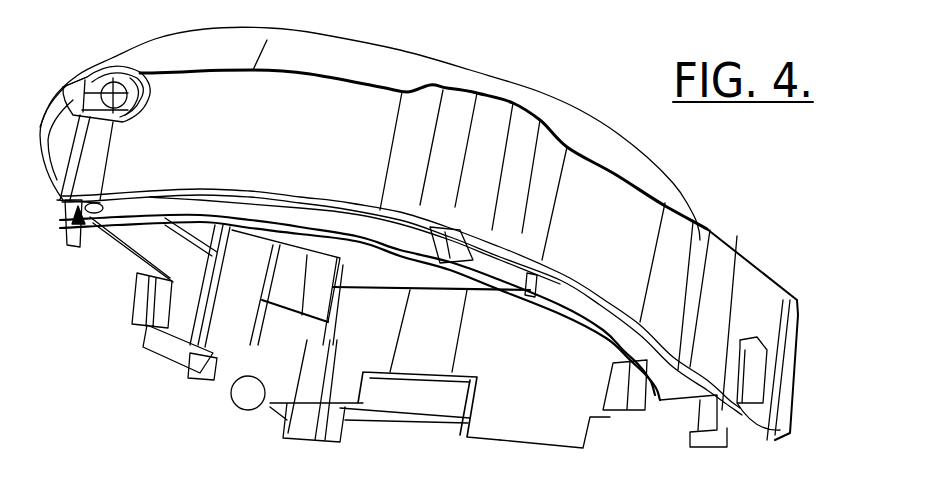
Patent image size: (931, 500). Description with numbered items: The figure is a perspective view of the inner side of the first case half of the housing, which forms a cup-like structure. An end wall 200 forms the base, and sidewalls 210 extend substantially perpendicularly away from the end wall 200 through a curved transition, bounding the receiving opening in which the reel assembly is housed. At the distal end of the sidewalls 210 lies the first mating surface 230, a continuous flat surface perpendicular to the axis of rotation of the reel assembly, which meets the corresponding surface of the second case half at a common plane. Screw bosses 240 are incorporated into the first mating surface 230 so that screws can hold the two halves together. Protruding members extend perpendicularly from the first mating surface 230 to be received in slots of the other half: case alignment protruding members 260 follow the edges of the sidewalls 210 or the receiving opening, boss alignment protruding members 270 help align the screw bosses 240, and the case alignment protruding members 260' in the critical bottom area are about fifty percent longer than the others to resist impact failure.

The end wall 200 is at (480, 72).
The sidewalls 210 is at (747, 307).
The first mating surface 230 is at (111, 240).
The screw bosses 240 is at (82, 224).
The case alignment protruding members 260 is at (401, 216).
The case alignment protruding members 260' is at (504, 436).
The boss alignment protruding members 270 is at (447, 260).